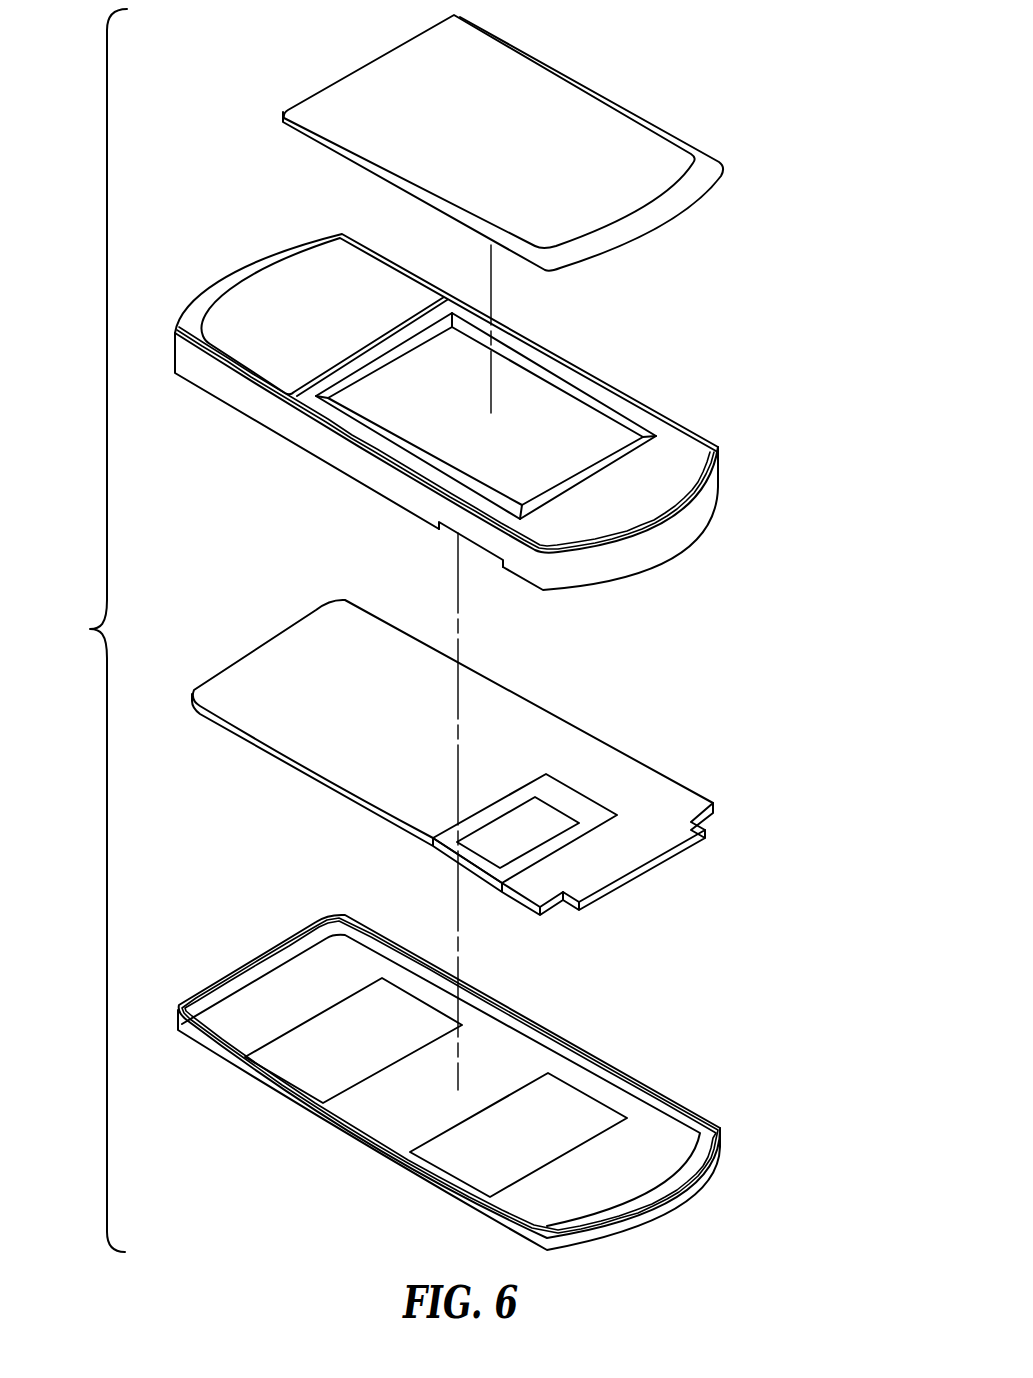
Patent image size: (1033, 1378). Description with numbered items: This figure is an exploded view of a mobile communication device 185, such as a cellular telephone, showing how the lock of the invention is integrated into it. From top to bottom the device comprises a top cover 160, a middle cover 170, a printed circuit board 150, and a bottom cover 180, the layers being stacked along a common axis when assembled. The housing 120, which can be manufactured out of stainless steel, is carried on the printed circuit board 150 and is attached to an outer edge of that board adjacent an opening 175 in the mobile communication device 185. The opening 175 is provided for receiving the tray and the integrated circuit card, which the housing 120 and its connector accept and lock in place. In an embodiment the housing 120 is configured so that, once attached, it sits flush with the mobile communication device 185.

The top cover 160 is at (578, 102).
The middle cover 170 is at (563, 372).
The opening 175 is at (447, 530).
The printed circuit board 150 is at (542, 727).
The housing 120 is at (568, 803).
The bottom cover 180 is at (512, 1047).
The mobile communication device 185 is at (88, 629).